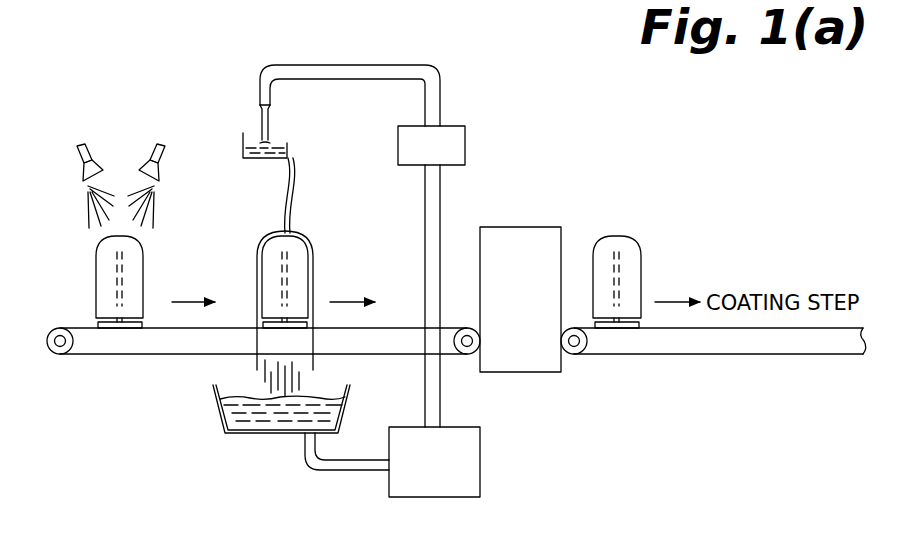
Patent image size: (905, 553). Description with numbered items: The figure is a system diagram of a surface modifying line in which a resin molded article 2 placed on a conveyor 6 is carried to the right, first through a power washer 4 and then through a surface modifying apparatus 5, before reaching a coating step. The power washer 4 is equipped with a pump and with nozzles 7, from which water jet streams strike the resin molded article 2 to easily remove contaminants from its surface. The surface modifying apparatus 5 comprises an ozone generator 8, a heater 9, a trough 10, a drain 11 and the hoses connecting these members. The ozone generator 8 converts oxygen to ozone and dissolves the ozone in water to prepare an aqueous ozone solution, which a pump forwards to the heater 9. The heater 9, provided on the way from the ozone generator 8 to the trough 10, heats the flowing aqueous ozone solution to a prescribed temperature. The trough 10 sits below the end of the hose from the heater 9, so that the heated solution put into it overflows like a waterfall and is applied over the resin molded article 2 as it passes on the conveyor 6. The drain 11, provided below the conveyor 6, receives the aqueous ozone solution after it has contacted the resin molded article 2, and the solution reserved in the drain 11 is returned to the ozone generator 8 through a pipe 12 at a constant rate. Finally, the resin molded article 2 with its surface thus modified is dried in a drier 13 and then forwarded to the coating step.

The resin molded article 2 is at (143, 252).
The power washer 4 is at (121, 140).
The surface modifying apparatus 5 is at (399, 57).
The conveyor 6 is at (100, 355).
The nozzles 7 is at (157, 152).
The ozone generator 8 is at (480, 447).
The heater 9 is at (465, 132).
The trough 10 is at (243, 148).
The drain 11 is at (213, 411).
The pipe 12 is at (348, 476).
The drier 13 is at (537, 227).